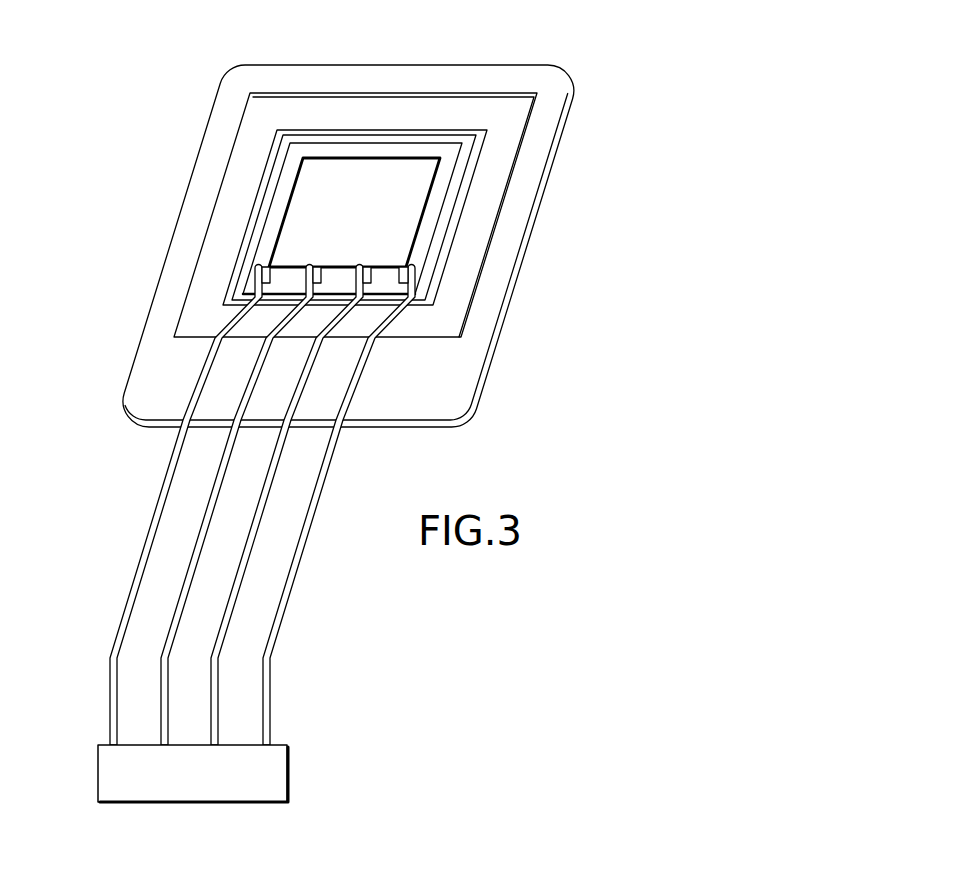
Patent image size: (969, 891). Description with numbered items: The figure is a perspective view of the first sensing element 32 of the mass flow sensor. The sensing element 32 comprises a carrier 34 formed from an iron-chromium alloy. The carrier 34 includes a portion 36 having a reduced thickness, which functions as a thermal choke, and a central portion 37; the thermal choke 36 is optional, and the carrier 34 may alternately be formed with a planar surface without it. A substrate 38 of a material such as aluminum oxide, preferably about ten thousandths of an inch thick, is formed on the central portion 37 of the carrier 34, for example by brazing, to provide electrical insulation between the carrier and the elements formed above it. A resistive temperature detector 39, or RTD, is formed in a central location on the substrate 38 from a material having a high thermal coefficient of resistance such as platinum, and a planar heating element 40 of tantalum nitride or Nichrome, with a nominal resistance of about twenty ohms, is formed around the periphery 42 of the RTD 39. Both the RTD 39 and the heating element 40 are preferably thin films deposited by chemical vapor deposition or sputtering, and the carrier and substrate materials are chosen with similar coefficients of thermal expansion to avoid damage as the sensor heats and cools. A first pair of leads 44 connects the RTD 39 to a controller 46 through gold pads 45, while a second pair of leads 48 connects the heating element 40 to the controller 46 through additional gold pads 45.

The first sensing element 32 is at (556, 48).
The carrier 34 is at (213, 103).
The portion having a reduced thickness 36 is at (517, 112).
The central portion 37 is at (457, 200).
The substrate 38 is at (437, 240).
The resistive temperature detector 39 is at (378, 243).
The planar heating element 40 is at (295, 164).
The periphery 42 is at (292, 197).
The first pair of leads 44 is at (162, 672).
The gold pads 45 is at (264, 278).
The controller 46 is at (287, 773).
The second pair of leads 48 is at (112, 704).